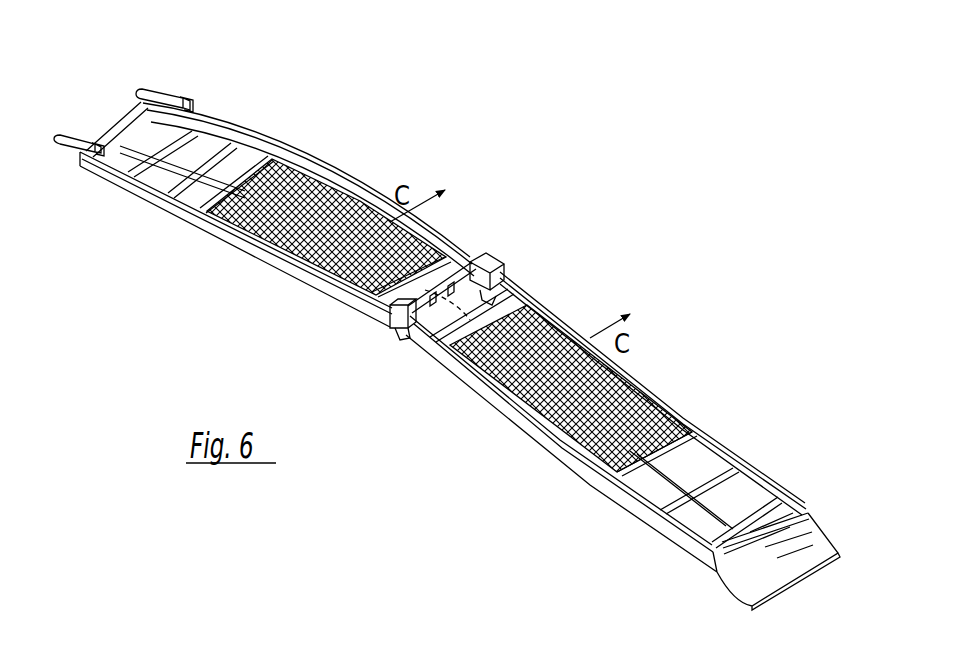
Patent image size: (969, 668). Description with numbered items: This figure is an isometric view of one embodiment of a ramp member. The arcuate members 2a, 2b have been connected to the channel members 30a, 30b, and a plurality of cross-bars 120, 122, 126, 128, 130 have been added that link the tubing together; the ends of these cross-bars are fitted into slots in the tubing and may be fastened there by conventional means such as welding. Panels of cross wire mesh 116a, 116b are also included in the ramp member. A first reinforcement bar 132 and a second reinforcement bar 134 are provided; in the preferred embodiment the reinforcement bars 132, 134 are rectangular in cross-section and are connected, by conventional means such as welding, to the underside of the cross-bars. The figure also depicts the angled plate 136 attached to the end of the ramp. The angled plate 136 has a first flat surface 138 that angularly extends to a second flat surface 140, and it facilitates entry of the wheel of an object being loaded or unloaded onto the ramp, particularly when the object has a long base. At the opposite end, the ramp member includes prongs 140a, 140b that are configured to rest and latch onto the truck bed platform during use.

The arcuate member 2a is at (497, 272).
The arcuate member 2b is at (407, 324).
The channel member 30a is at (484, 262).
The channel member 30b is at (392, 316).
The cross wire mesh 116a is at (612, 385).
The cross wire mesh 116b is at (313, 178).
The cross-bar 120 is at (673, 472).
The cross-bar 122 is at (760, 488).
The cross-bar 126 is at (250, 170).
The cross-bar 128 is at (210, 168).
The cross-bar 130 is at (135, 115).
The first reinforcement bar 132 is at (730, 468).
The second reinforcement bar 134 is at (255, 148).
The angled plate 136 is at (775, 570).
The first flat surface 138 is at (810, 543).
The second flat surface 140 is at (787, 518).
The prong 140a is at (160, 88).
The prong 140b is at (56, 142).